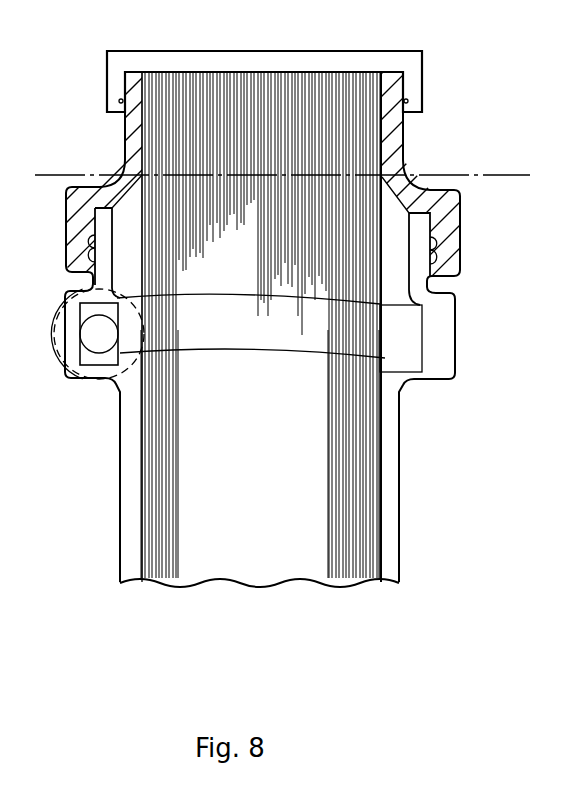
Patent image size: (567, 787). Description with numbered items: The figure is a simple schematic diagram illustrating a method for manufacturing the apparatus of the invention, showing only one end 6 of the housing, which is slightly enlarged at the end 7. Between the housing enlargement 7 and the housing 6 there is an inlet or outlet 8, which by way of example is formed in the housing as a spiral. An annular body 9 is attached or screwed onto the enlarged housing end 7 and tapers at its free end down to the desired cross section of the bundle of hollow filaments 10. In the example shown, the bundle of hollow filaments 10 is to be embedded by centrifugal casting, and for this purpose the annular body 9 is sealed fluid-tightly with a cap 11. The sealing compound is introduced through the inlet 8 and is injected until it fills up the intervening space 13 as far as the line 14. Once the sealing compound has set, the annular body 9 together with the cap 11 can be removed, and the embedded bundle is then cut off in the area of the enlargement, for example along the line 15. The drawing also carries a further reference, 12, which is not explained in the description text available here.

The housing end 6 is at (125, 423).
The housing enlargement 7 is at (437, 266).
The inlet or outlet 8 is at (105, 335).
The annular body 9 is at (447, 219).
The bundle of hollow filaments 10 is at (160, 458).
The cap 11 is at (316, 64).
The annular groove 12 is at (392, 270).
The intervening space 13 is at (278, 228).
The line 14 is at (308, 295).
The line 15 is at (482, 176).